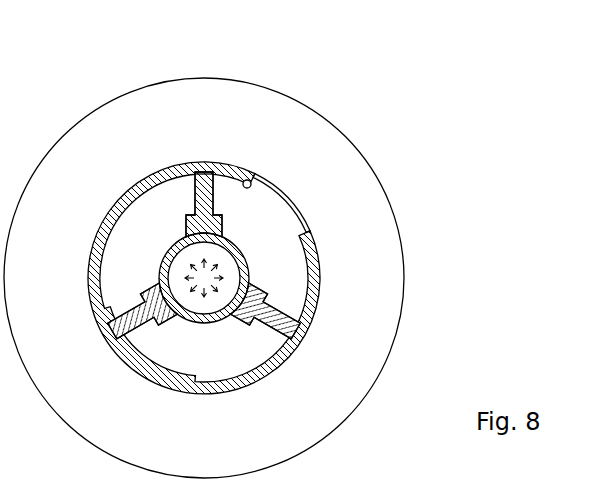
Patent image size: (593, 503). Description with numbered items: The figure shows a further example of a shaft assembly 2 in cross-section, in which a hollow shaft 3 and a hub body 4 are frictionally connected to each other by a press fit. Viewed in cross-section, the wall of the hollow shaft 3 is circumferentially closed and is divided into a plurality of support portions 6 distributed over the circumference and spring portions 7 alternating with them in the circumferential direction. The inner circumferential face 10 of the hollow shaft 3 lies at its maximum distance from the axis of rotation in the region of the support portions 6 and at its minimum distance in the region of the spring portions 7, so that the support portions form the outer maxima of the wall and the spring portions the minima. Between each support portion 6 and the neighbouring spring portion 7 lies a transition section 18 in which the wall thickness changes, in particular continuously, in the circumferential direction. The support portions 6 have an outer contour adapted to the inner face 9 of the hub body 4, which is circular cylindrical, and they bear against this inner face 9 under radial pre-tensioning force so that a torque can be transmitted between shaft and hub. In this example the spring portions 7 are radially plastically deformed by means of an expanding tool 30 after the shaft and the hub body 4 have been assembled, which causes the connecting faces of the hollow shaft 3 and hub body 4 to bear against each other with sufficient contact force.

The shaft assembly 2 is at (50, 107).
The hub body 4 is at (326, 101).
The hollow shaft 3 is at (312, 213).
The support portions 6 is at (288, 200).
The inner circumferential face 10 is at (244, 182).
The expanding tool 30 is at (283, 265).
The spring portions 7 is at (194, 172).
The transition section 18 is at (212, 172).
The inner face 9 is at (300, 332).